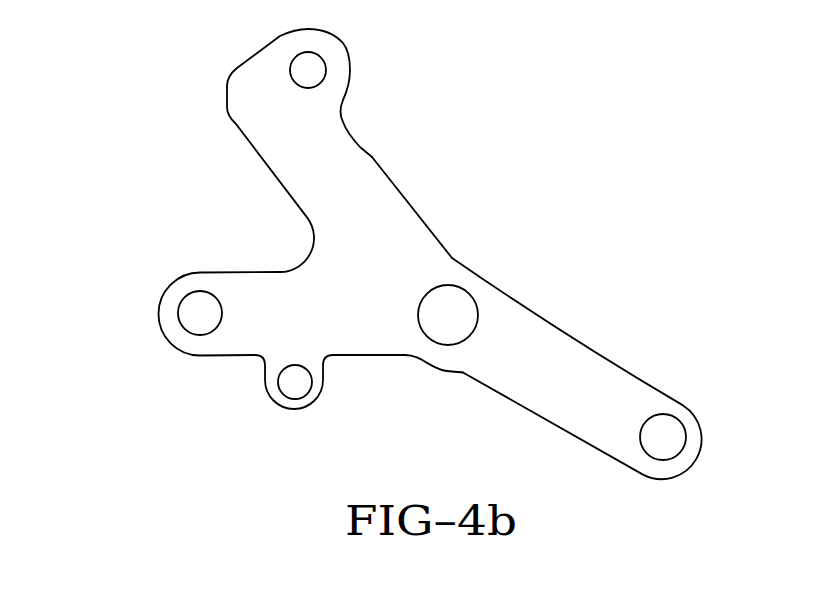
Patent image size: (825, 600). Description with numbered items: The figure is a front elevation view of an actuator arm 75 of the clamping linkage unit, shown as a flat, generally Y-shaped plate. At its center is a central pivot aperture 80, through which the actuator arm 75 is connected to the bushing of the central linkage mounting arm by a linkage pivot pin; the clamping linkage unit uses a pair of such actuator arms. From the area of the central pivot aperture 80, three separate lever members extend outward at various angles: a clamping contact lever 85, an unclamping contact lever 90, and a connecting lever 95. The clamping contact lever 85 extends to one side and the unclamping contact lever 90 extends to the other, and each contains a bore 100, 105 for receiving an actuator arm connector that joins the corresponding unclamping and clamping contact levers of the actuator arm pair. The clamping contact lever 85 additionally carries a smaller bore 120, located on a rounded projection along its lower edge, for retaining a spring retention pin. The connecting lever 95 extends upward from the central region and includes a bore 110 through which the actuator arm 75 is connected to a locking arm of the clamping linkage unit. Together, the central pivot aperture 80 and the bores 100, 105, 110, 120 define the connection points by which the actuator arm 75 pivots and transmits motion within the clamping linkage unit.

The actuator arm 75 is at (478, 180).
The central pivot aperture 80 is at (475, 300).
The clamping contact lever 85 is at (230, 340).
The unclamping contact lever 90 is at (638, 393).
The connecting lever 95 is at (243, 88).
The bore 100 is at (190, 308).
The bore 105 is at (667, 437).
The bore 110 is at (323, 66).
The bore 120 is at (292, 393).